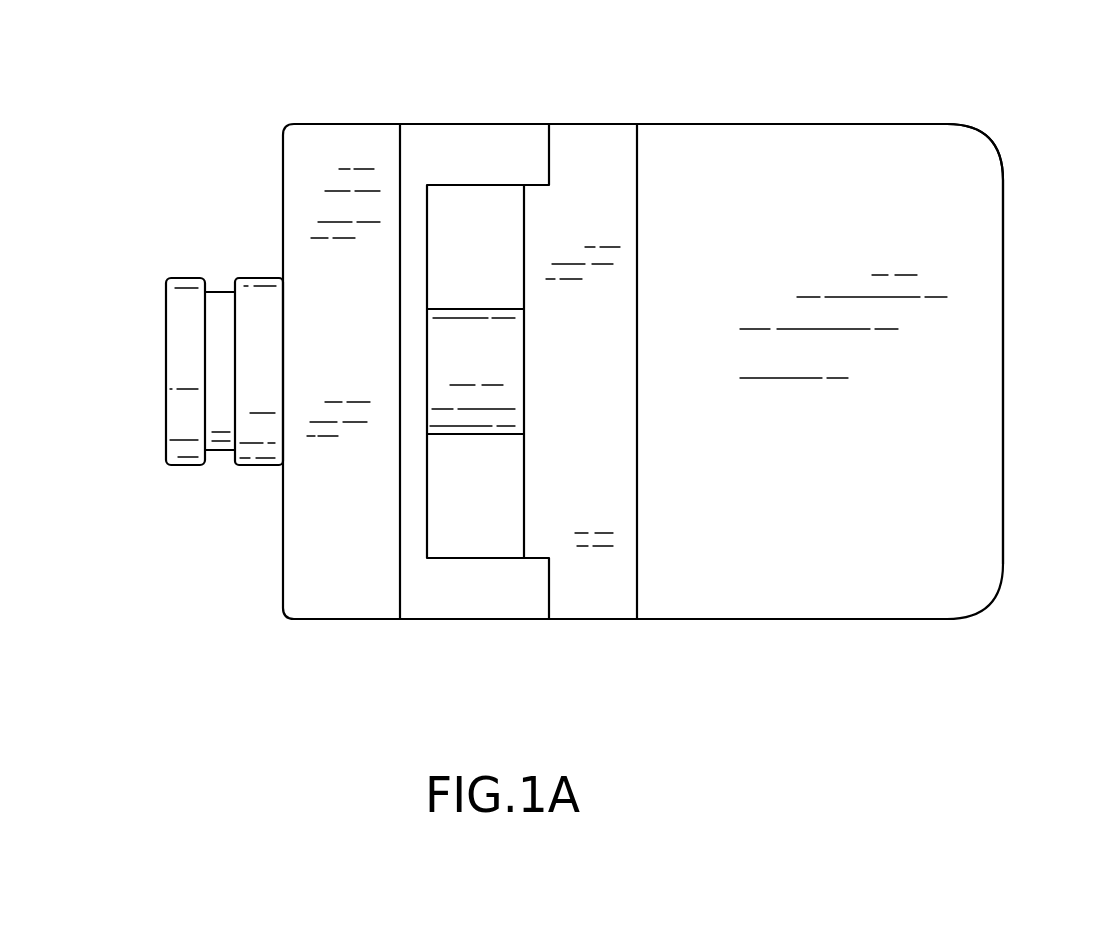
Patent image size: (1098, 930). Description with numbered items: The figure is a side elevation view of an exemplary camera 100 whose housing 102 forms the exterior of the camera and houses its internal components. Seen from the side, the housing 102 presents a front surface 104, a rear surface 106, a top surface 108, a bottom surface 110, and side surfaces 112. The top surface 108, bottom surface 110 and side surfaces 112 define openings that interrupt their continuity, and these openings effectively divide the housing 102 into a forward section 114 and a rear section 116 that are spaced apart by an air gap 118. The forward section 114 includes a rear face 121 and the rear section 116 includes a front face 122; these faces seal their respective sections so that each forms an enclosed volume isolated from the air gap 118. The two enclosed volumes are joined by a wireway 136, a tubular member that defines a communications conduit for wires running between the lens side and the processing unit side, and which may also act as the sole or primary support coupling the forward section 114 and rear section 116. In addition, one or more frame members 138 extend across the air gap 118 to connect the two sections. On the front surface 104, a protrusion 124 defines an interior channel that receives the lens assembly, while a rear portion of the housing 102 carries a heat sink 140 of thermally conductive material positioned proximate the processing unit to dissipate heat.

The camera 100 is at (108, 125).
The housing 102 is at (628, 657).
The front surface 104 is at (283, 520).
The rear surface 106 is at (997, 300).
The top surface 108 is at (712, 124).
The bottom surface 110 is at (310, 619).
The side surfaces 112 is at (845, 147).
The forward section 114 is at (357, 647).
The rear section 116 is at (855, 675).
The air gap 118 is at (487, 503).
The rear face 121 is at (427, 492).
The front face 122 is at (524, 195).
The protrusion 124 is at (260, 278).
The wireway 136 is at (502, 353).
The frame members 138 is at (498, 130).
The heat sink 140 is at (972, 135).